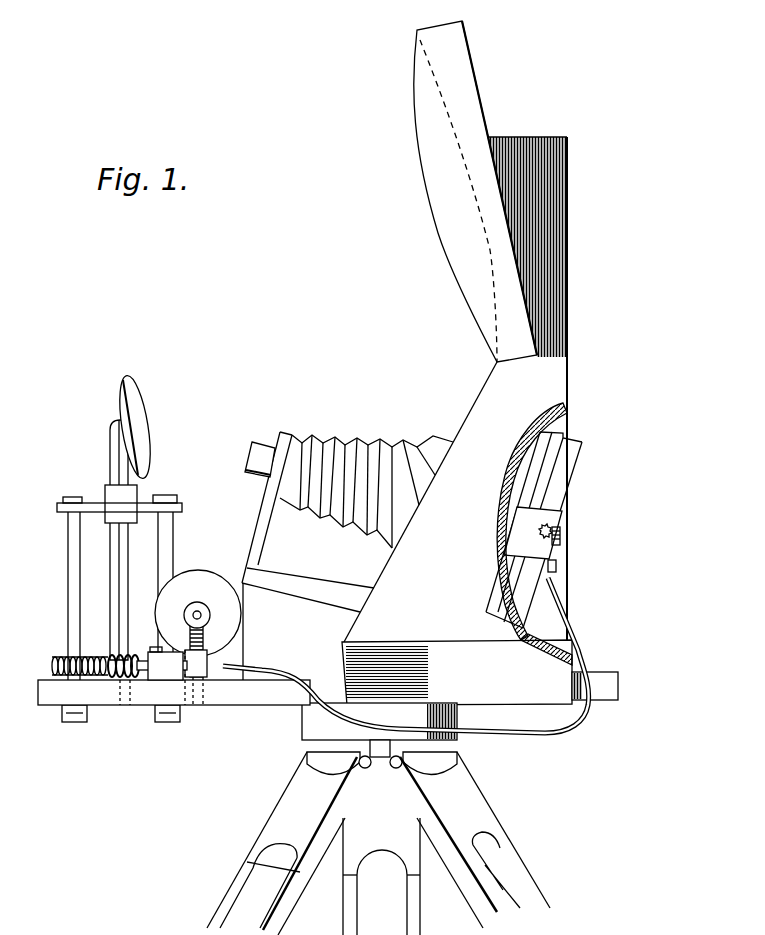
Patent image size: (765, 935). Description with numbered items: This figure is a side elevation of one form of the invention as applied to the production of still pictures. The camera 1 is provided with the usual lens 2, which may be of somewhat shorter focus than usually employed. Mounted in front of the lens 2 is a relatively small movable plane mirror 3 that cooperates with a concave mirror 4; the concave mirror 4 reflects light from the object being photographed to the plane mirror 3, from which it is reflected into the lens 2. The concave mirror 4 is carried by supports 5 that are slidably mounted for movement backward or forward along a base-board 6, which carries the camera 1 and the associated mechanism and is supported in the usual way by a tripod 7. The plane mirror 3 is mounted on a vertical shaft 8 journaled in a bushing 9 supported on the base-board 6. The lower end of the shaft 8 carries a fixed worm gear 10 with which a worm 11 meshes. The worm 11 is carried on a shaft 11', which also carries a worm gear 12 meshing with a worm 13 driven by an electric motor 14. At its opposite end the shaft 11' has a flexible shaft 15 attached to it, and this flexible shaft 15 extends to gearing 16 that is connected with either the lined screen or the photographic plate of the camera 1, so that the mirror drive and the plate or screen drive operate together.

The camera 1 is at (522, 475).
The lens 2 is at (260, 450).
The plane mirror 3 is at (130, 408).
The concave mirror 4 is at (442, 216).
The supports 5 is at (457, 421).
The base-board 6 is at (610, 688).
The tripod 7 is at (468, 798).
The vertical shaft 8 is at (117, 578).
The bushing 9 is at (120, 492).
The worm gear 10 is at (53, 657).
The worm 11 is at (112, 698).
The shaft 11' is at (153, 699).
The worm gear 12 is at (200, 707).
The worm 13 is at (205, 610).
The electric motor 14 is at (205, 572).
The flexible shaft 15 is at (265, 663).
The gearing 16 is at (565, 530).